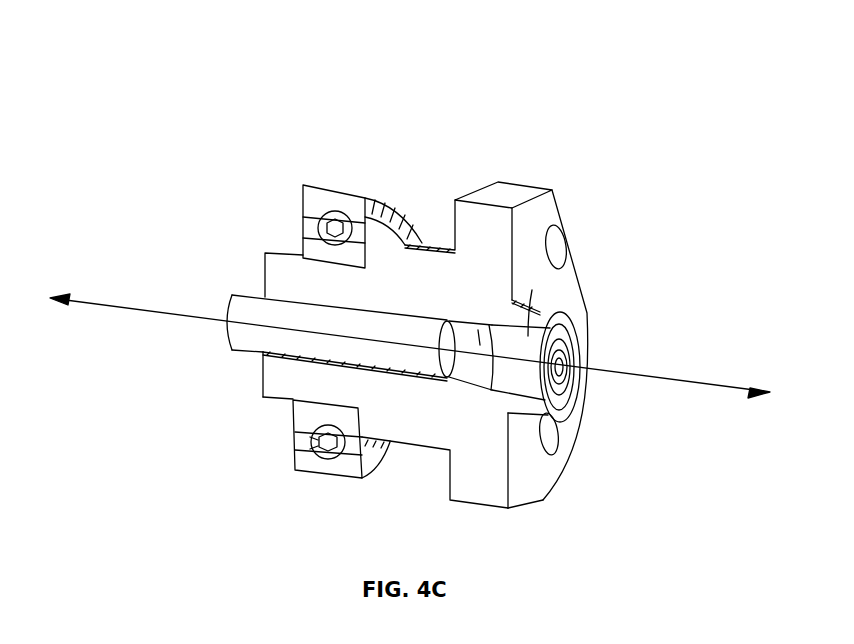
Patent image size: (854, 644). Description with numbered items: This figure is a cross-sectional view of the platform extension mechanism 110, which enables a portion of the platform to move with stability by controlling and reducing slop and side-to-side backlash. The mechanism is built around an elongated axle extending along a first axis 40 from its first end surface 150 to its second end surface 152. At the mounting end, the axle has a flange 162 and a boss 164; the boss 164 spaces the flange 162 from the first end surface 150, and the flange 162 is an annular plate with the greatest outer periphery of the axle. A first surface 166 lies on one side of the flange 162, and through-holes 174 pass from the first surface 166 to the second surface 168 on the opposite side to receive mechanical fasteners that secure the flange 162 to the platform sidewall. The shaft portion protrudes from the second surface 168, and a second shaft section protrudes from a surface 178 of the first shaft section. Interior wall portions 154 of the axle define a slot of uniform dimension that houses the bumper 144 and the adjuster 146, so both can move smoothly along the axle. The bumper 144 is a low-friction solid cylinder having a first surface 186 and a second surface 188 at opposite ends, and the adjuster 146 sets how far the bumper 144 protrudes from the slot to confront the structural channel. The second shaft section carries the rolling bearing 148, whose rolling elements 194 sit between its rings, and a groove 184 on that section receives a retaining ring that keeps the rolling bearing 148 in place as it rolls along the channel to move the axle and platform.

The platform extension mechanism 110 is at (462, 84).
The first axis 40 is at (738, 388).
The bumper 144 is at (230, 297).
The second surface 188 is at (223, 330).
The second end surface 152 is at (263, 268).
The groove 184 is at (295, 255).
The surface 178 is at (367, 257).
The second surface 168 is at (458, 223).
The rolling bearing 148 is at (335, 470).
The rolling elements 194 is at (327, 440).
The first surface 186 is at (447, 356).
The interior wall portions 154 is at (475, 342).
The flange 162 is at (515, 200).
The first surface 166 is at (527, 460).
The through-holes 174 is at (552, 248).
The boss 164 is at (545, 305).
The first end surface 150 is at (558, 322).
The adjuster 146 is at (530, 303).